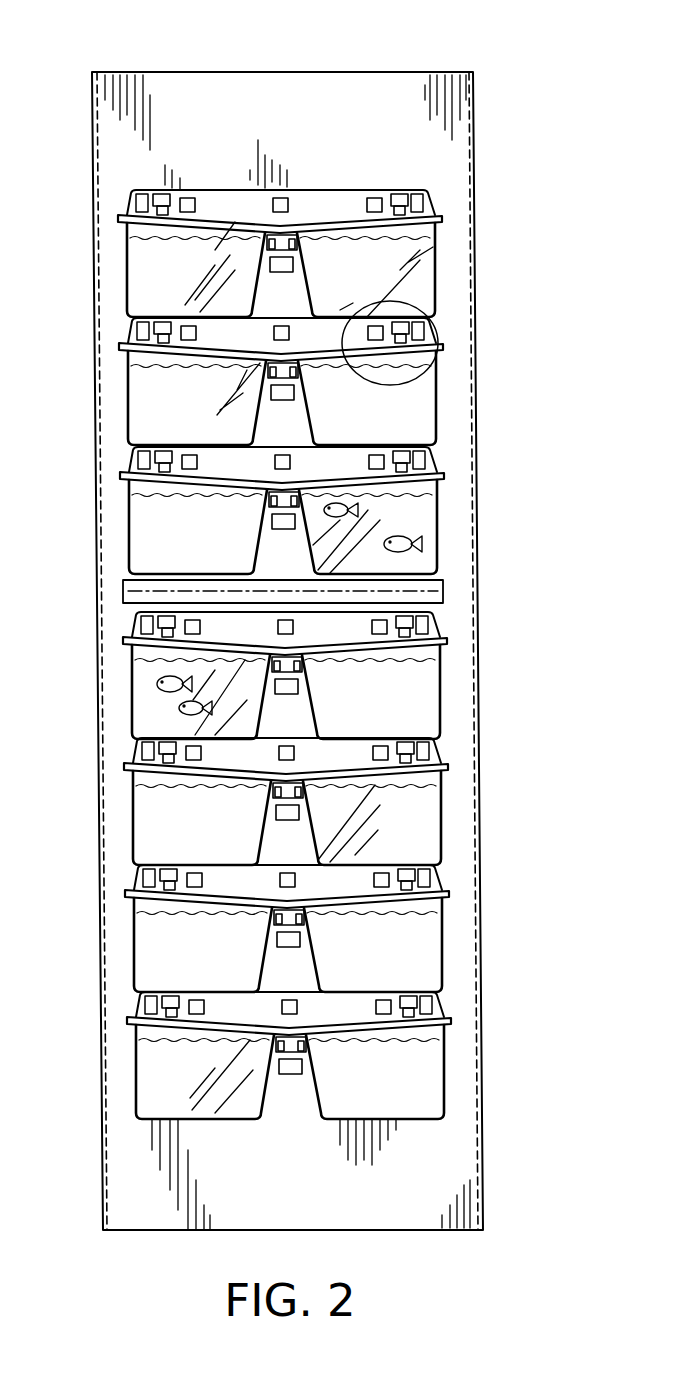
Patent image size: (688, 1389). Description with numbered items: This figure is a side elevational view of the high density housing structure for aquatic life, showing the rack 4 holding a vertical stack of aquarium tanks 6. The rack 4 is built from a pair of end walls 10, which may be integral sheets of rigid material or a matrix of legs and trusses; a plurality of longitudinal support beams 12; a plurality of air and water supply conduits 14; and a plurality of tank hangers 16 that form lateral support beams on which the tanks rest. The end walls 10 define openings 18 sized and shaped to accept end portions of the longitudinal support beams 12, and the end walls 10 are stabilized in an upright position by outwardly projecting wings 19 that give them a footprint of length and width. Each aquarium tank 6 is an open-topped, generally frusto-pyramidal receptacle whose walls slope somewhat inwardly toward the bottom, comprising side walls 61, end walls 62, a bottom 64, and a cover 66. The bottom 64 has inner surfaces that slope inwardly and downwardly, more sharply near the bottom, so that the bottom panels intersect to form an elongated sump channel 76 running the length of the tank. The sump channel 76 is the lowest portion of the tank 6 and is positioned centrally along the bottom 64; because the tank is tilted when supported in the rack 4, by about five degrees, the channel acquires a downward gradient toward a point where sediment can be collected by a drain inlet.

The rack 4 is at (493, 563).
The aquarium tank 6 is at (152, 290).
The end wall 10 is at (262, 103).
The longitudinal support beam 12 is at (184, 193).
The air and water supply conduit 14 is at (160, 193).
The tank hanger 16 is at (314, 193).
The opening 18 is at (197, 1012).
The outwardly projecting wing 19 is at (478, 90).
The side wall 61 is at (413, 415).
The end wall 62 is at (302, 287).
The bottom 64 is at (355, 488).
The cover 66 is at (438, 313).
The sump channel 76 is at (418, 1115).